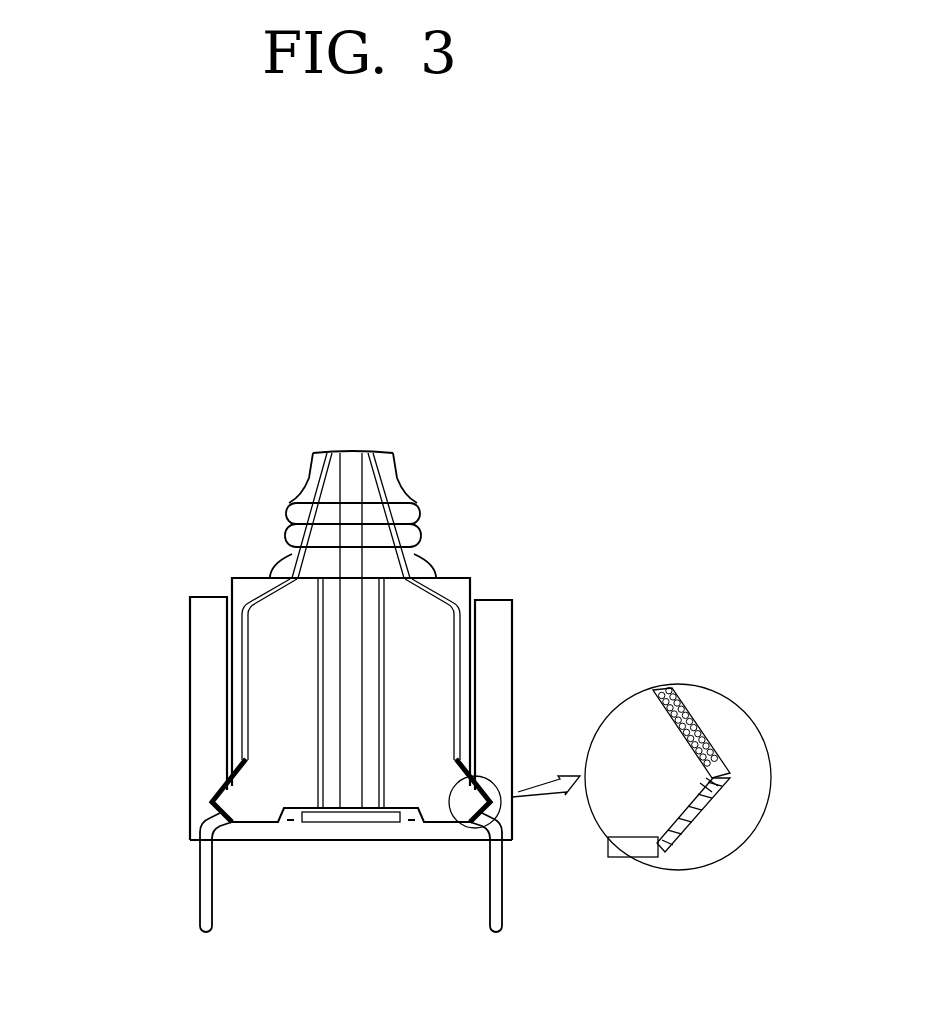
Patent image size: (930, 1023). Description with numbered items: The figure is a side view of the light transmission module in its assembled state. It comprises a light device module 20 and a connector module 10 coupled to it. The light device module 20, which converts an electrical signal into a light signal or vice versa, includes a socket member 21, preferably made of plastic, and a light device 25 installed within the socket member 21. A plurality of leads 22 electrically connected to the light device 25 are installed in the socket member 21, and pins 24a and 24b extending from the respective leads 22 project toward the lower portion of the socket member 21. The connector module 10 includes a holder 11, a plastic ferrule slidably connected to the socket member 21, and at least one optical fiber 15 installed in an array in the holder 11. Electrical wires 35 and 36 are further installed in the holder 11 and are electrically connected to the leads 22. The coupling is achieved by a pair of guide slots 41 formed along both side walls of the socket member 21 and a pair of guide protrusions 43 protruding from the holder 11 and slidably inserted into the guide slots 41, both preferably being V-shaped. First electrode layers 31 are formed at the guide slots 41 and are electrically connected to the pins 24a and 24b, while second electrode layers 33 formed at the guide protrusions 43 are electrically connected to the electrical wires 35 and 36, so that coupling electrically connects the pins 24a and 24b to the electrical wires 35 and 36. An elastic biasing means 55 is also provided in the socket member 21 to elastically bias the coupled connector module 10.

The connector module 10 is at (252, 540).
The optical fiber 15 is at (353, 563).
The holder 11 is at (438, 703).
The electrical wire 35 is at (242, 625).
The electrical wire 36 is at (460, 628).
The elastic biasing means 55 is at (368, 777).
The light device module 20 is at (178, 704).
The socket member 21 is at (198, 752).
The lead 22 is at (410, 823).
The light device 25 is at (308, 822).
The pin 24a is at (205, 905).
The pin 24b is at (495, 888).
The first electrode layer 31 is at (688, 705).
The second electrode layer 33 is at (657, 695).
The guide slot 41 is at (727, 777).
The guide protrusion 43 is at (707, 780).